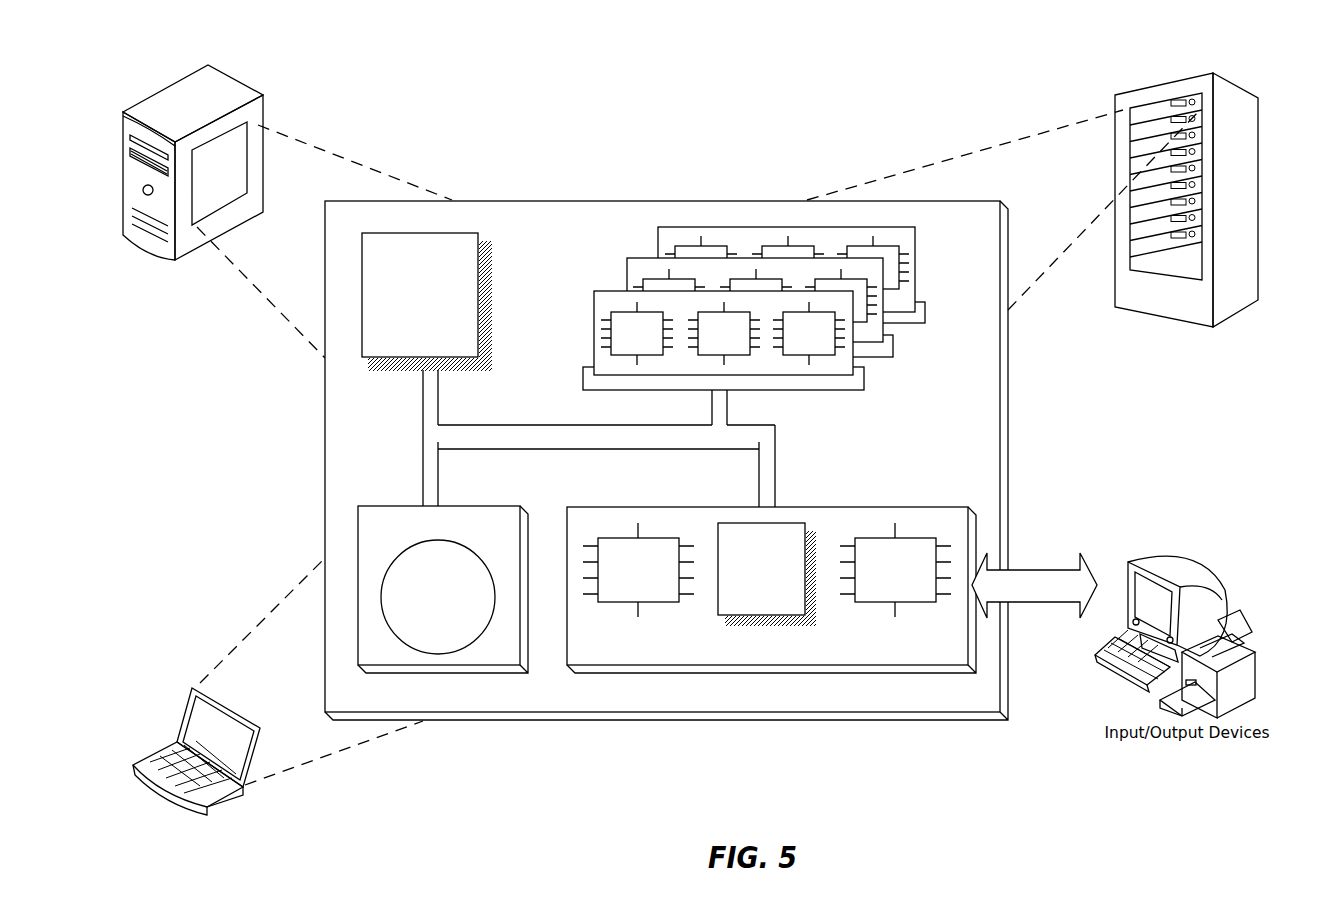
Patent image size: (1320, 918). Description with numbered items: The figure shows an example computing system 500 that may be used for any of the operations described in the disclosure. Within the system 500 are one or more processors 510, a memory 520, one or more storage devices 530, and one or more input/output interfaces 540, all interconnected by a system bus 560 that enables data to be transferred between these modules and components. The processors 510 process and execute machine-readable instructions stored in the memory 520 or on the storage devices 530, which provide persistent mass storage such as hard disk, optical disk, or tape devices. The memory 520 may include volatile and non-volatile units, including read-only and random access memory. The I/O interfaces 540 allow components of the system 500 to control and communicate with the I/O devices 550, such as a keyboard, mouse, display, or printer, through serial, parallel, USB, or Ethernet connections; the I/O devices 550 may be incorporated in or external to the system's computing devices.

The computing system 500 is at (503, 130).
The processor 510 is at (470, 353).
The memory 520 is at (919, 353).
The storage device 530 is at (510, 658).
The I/O interface 540 is at (867, 657).
The I/O device 550 is at (1127, 563).
The system bus 560 is at (596, 445).